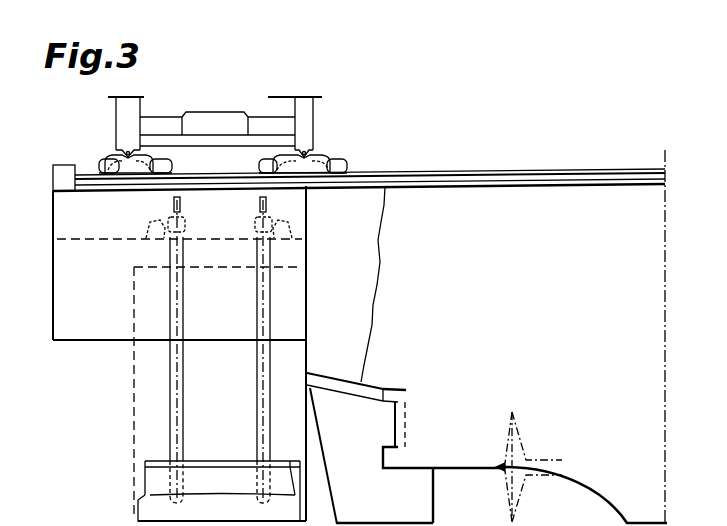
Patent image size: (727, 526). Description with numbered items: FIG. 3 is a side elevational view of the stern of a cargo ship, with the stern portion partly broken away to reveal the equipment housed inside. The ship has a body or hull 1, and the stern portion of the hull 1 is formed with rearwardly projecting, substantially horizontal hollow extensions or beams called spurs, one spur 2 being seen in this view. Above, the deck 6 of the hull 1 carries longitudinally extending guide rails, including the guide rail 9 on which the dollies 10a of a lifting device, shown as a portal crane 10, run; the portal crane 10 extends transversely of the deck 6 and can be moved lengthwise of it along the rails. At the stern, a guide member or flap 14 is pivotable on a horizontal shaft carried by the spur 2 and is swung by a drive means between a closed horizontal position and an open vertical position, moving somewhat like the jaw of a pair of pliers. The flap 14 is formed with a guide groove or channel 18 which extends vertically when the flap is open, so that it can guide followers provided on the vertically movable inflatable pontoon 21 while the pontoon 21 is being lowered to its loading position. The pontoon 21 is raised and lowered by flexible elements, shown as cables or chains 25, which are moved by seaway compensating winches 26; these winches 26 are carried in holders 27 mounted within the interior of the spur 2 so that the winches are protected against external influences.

The hull 1 is at (554, 390).
The spur 2 is at (62, 276).
The deck 6 is at (608, 187).
The guide rail 9 is at (462, 172).
The portal crane 10 is at (217, 118).
The dolly 10a is at (258, 160).
The flap 14 is at (146, 359).
The guide channel 18 is at (252, 312).
The pontoon 21 is at (156, 479).
The cable 25 is at (258, 384).
The seaway compensating winch 26 is at (151, 223).
The holder 27 is at (92, 241).